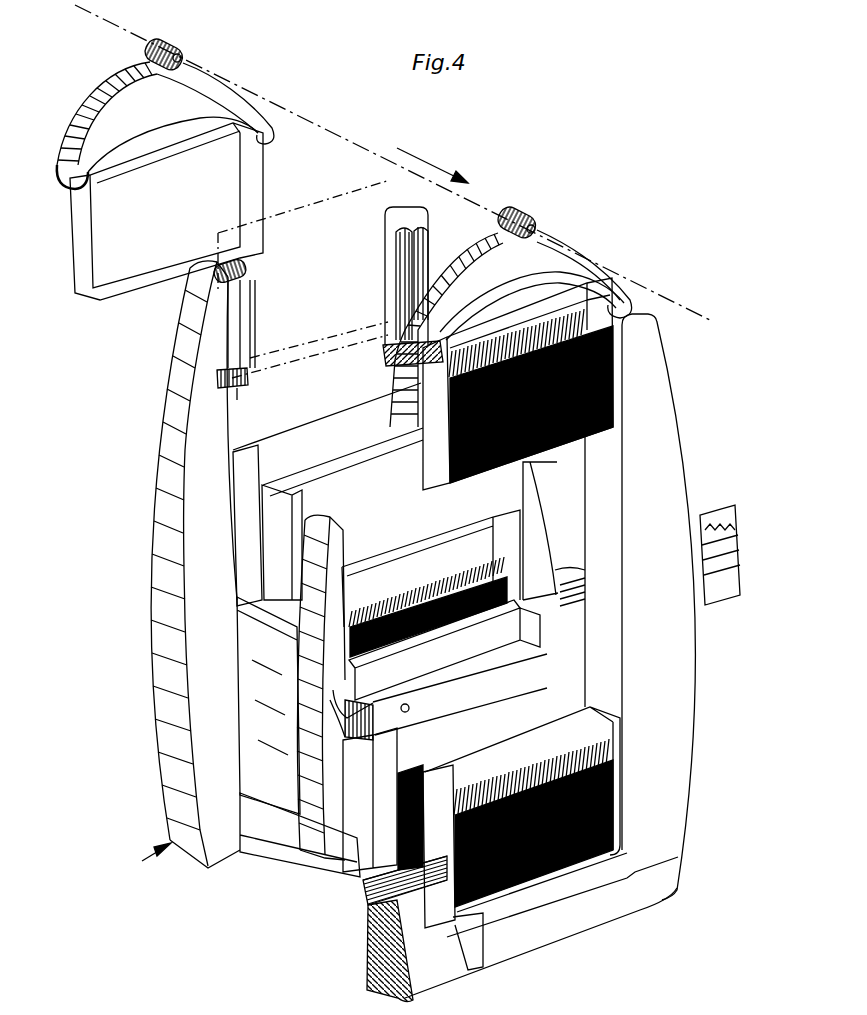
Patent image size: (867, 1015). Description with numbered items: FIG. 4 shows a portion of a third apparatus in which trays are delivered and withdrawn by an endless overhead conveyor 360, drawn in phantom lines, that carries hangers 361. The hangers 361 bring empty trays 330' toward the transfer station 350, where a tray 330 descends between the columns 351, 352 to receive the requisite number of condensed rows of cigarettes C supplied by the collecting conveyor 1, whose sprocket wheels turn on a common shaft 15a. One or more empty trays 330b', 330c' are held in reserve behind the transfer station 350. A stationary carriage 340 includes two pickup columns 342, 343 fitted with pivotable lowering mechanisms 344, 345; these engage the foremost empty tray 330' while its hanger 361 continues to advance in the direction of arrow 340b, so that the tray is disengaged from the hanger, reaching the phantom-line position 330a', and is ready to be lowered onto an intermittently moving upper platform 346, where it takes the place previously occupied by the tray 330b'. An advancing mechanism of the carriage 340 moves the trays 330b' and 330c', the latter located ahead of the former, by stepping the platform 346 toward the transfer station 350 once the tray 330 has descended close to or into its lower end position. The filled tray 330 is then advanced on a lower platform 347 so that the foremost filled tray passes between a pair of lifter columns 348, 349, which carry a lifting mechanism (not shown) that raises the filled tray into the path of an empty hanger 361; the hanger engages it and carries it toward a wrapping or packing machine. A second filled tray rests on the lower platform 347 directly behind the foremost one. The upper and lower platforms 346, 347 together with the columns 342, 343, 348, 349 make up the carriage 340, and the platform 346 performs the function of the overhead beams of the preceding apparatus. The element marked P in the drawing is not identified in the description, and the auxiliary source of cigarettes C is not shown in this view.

The collecting conveyor 1 is at (741, 502).
The common shaft of the sprocket wheels 15a is at (405, 712).
The tray 330 is at (431, 564).
The empty tray 330' is at (166, 229).
The phantom-line position of the empty tray 330a' is at (304, 268).
The empty tray held in reserve 330b' is at (327, 494).
The empty tray held in reserve 330c' is at (340, 514).
The stationary carriage 340 is at (131, 861).
The arrow 340b is at (410, 160).
The pickup column 342 is at (167, 532).
The pickup column 343 is at (437, 258).
The pivotable lowering mechanism 344 is at (253, 340).
The pivotable lowering mechanism 345 is at (407, 277).
The upper platform 346 is at (267, 632).
The lower platform 347 is at (540, 883).
The lifter column 348 is at (400, 942).
The lifter column 349 is at (677, 482).
The transfer station 350 is at (307, 843).
The column 351 is at (335, 547).
The column 352 is at (542, 513).
The endless overhead conveyor 360 is at (376, 146).
The hanger 361 is at (98, 127).
The cigarettes C is at (384, 628).
The pole bar P is at (442, 648).